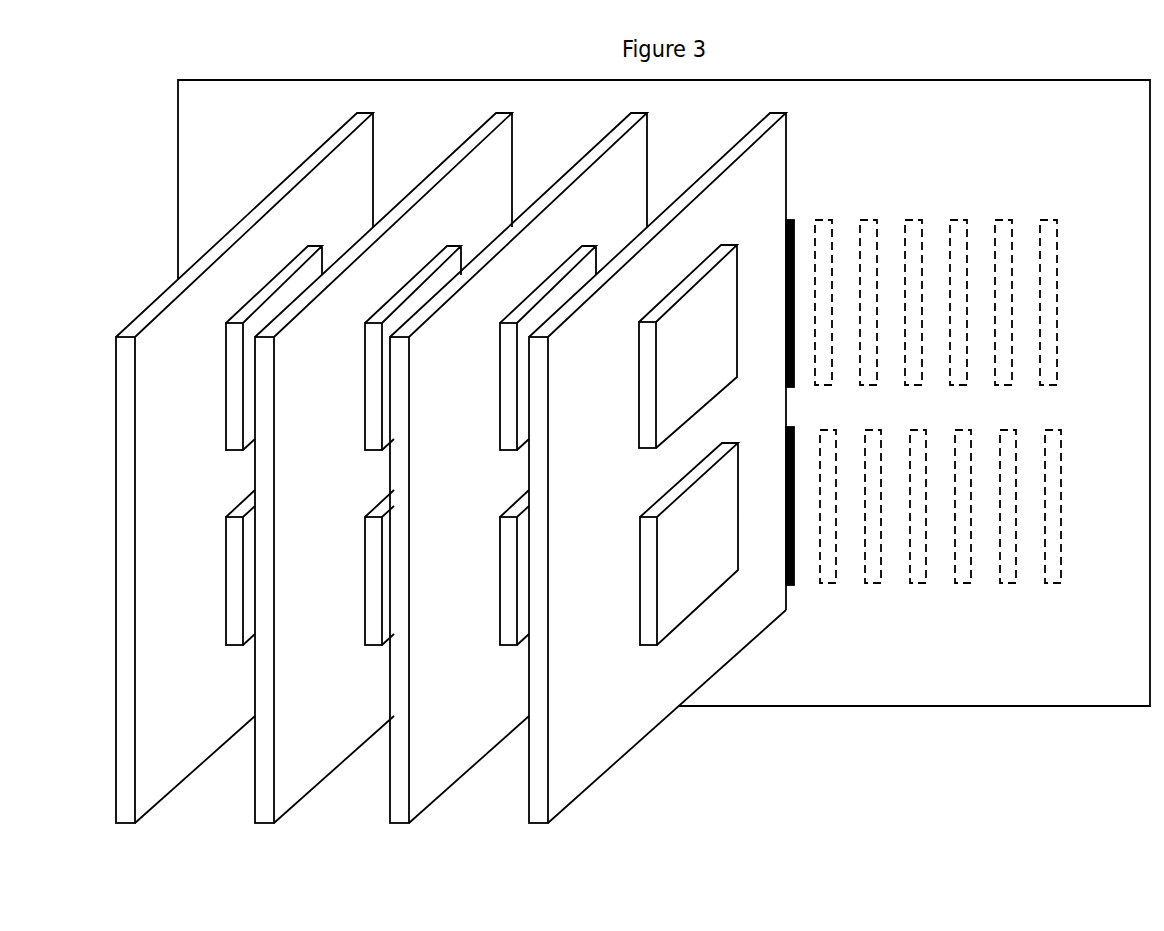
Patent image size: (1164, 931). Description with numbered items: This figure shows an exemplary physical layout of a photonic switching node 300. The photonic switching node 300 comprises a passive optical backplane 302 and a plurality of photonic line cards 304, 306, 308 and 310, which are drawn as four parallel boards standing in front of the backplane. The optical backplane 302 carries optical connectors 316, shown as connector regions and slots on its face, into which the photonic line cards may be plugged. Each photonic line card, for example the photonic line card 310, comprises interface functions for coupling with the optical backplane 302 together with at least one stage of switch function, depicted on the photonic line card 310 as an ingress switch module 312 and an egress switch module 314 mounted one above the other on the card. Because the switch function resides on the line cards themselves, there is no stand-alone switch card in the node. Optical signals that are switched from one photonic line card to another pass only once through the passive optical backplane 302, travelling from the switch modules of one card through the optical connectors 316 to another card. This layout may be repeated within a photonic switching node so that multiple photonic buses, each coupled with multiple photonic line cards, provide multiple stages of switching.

The photonic switching node 300 is at (1052, 768).
The passive optical backplane 302 is at (664, 393).
The photonic line card 304 is at (168, 793).
The photonic line card 306 is at (305, 793).
The photonic line card 308 is at (433, 798).
The photonic line card 310 is at (572, 798).
The ingress switch module 312 is at (712, 382).
The egress switch module 314 is at (695, 595).
The optical connectors 316 is at (795, 218).